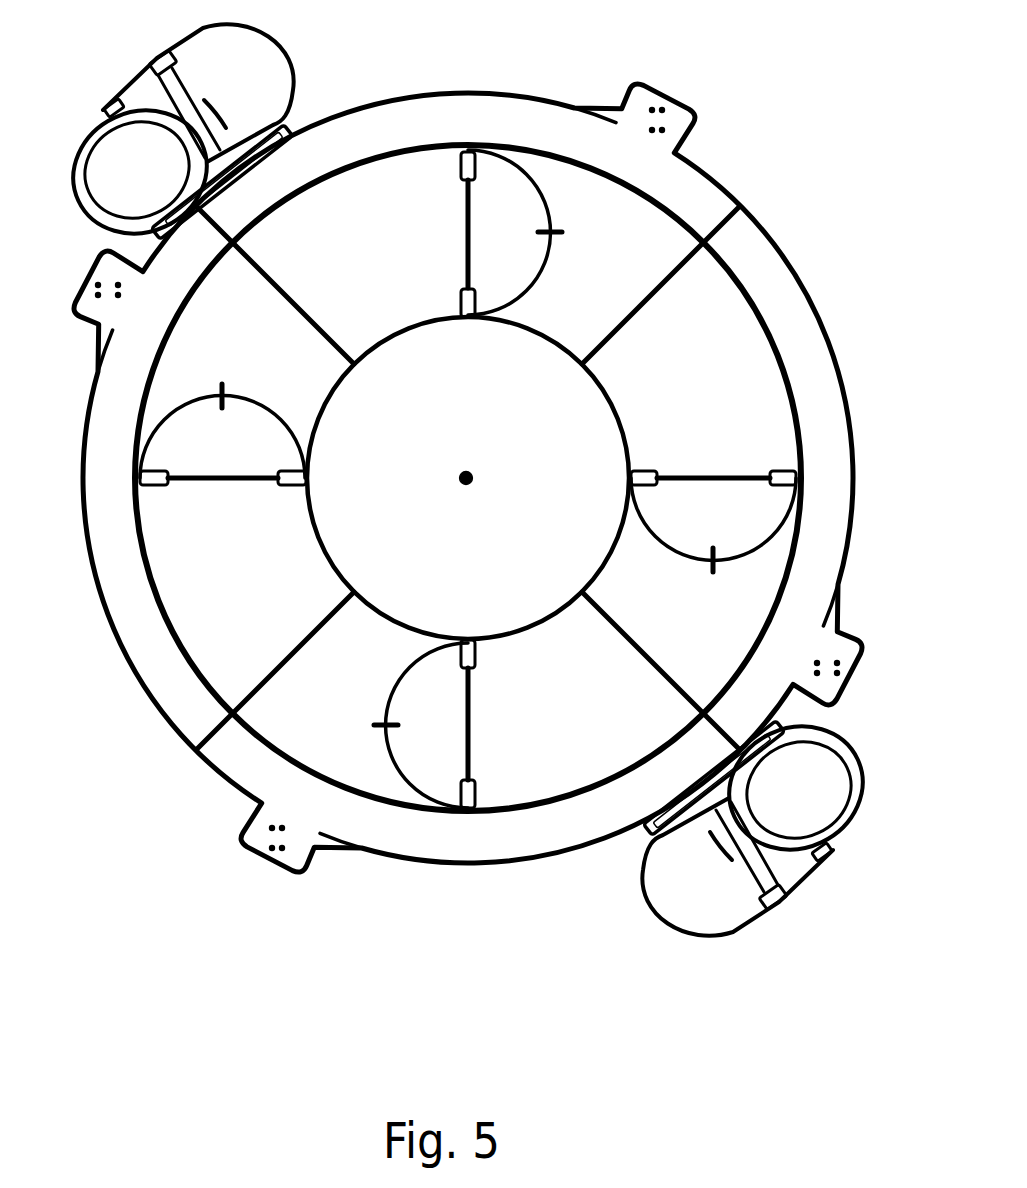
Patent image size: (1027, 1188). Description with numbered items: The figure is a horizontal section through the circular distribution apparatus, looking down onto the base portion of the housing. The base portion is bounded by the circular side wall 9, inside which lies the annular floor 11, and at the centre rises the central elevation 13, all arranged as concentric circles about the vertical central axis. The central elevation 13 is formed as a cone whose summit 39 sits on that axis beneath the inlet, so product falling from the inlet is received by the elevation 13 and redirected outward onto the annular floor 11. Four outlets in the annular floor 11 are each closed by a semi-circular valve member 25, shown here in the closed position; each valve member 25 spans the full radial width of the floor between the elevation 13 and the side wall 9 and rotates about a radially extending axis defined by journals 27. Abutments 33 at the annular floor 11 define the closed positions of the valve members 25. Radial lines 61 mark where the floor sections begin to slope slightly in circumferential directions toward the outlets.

The side wall 9 is at (740, 297).
The annular floor 11 is at (722, 393).
The central elevation 13 is at (559, 521).
The valve member 25 is at (500, 232).
The journal 27 is at (643, 468).
The abutment 33 is at (712, 566).
The summit 39 is at (462, 472).
The radial line 61 is at (310, 628).